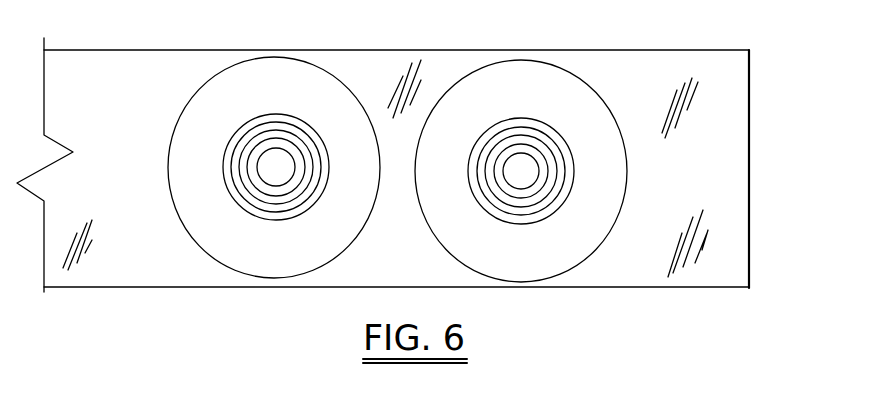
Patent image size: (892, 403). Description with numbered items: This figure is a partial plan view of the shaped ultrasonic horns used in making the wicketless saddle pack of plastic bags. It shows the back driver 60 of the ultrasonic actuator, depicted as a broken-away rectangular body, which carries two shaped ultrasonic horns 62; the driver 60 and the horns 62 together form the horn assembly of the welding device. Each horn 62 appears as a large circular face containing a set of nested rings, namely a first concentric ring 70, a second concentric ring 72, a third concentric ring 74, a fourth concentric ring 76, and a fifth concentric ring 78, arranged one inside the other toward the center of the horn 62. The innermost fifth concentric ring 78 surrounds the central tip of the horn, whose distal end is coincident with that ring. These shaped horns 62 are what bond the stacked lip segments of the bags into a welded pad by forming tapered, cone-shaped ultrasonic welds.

The back driver 60 is at (659, 63).
The shaped ultrasonic horn 62 is at (180, 193).
The first concentric ring 70 is at (273, 117).
The second concentric ring 72 is at (305, 140).
The third concentric ring 74 is at (307, 172).
The fourth concentric ring 76 is at (260, 185).
The fifth concentric ring 78 is at (274, 157).